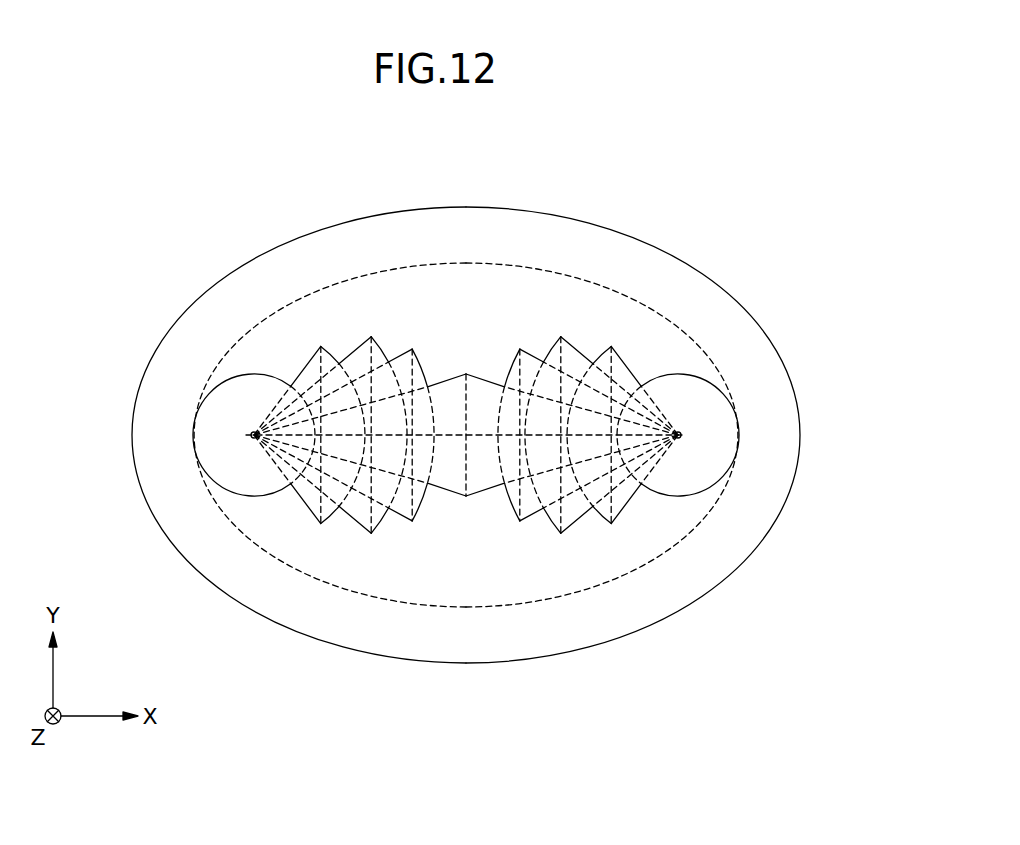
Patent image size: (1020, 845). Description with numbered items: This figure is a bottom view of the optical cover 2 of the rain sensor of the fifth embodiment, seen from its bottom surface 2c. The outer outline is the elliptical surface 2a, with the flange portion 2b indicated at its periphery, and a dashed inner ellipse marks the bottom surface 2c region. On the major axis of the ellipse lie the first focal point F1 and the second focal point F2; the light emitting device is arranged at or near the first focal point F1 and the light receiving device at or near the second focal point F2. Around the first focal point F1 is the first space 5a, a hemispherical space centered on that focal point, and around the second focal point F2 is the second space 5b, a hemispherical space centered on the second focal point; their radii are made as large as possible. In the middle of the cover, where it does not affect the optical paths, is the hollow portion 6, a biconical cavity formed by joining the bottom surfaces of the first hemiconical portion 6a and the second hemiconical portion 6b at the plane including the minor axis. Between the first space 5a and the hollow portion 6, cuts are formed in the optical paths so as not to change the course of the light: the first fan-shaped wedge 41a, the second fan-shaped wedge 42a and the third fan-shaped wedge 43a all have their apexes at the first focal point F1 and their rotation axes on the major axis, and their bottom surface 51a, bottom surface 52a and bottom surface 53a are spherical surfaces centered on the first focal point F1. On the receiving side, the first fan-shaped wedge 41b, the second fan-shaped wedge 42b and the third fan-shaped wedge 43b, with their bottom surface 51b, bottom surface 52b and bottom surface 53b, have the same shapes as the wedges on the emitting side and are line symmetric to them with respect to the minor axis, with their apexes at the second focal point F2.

The optical cover 2 is at (182, 241).
The elliptical surface 2a is at (352, 277).
The flange portion 2b is at (748, 330).
The bottom surface 2c is at (545, 268).
The first space 5a is at (212, 455).
The second space 5b is at (720, 455).
The hollow portion 6 is at (465, 311).
The first hemiconical portion 6a is at (445, 397).
The second hemiconical portion 6b is at (487, 397).
The first fan-shaped wedge 41a is at (308, 500).
The bottom surface of the first fan-shaped wedge 51a is at (336, 513).
The second fan-shaped wedge 42a is at (362, 512).
The bottom surface of the second fan-shaped wedge 52a is at (390, 509).
The third fan-shaped wedge 43a is at (405, 507).
The bottom surface of the third fan-shaped wedge 53a is at (428, 500).
The first fan-shaped wedge 41b is at (662, 516).
The bottom surface of the first fan-shaped wedge 51b is at (622, 516).
The second fan-shaped wedge 42b is at (589, 529).
The bottom surface of the second fan-shaped wedge 52b is at (601, 519).
The third fan-shaped wedge 43b is at (526, 546).
The bottom surface of the third fan-shaped wedge 53b is at (574, 527).
The first focal point F1 is at (254, 435).
The second focal point F2 is at (678, 435).